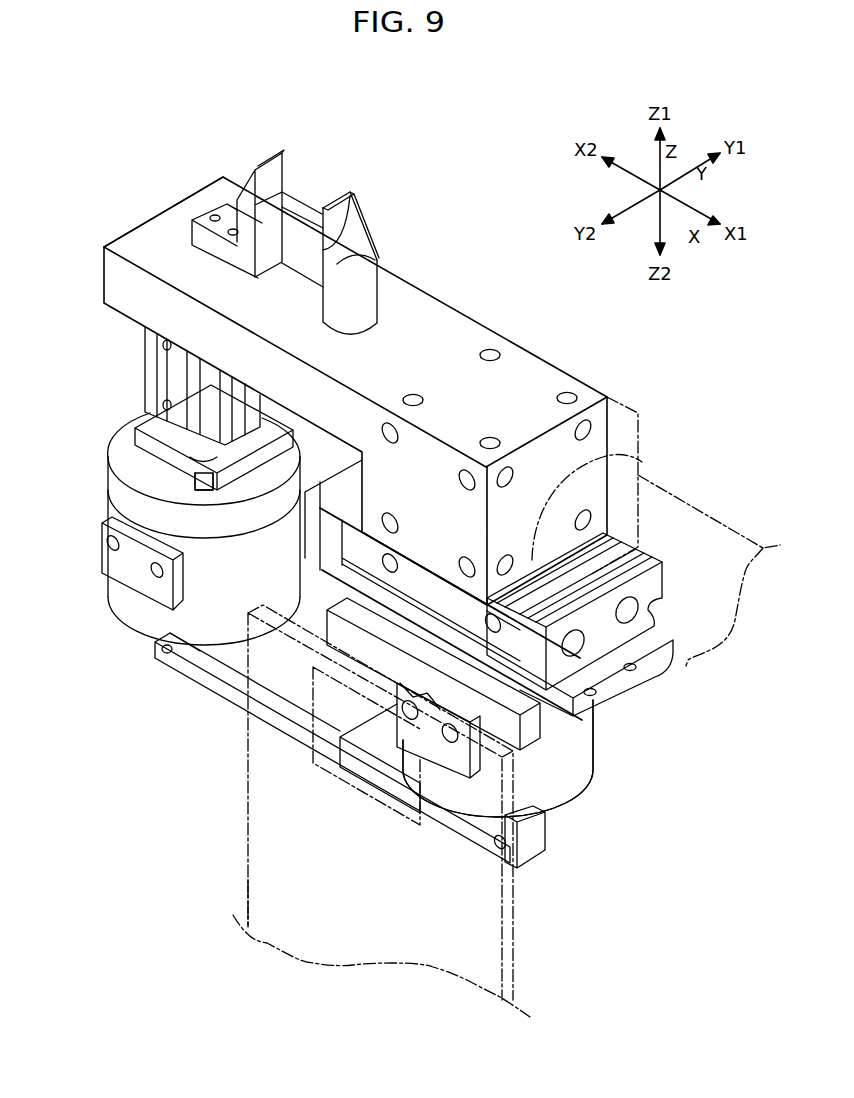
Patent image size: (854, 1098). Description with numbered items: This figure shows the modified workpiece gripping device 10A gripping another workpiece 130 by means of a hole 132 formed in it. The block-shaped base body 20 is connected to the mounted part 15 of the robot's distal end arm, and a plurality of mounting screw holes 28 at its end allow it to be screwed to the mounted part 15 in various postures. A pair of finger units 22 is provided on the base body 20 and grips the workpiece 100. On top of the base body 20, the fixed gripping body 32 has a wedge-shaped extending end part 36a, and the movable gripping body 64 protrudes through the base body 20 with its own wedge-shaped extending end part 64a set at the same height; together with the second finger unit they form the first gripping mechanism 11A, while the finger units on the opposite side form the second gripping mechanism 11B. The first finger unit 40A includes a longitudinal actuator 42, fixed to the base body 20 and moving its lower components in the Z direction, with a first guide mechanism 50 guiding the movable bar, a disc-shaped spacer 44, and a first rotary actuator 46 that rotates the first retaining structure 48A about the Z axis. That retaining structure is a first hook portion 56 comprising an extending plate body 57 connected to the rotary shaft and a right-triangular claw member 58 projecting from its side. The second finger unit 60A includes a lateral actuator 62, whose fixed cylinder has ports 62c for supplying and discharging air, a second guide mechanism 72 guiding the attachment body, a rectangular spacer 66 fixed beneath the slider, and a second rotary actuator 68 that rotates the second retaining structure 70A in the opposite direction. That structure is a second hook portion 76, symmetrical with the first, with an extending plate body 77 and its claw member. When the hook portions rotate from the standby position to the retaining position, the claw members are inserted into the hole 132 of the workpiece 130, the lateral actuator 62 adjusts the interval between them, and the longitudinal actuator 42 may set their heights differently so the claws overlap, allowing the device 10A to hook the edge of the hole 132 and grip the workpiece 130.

The workpiece gripping device 10A is at (117, 104).
The first gripping mechanism 11A is at (363, 184).
The second gripping mechanism 11B is at (308, 792).
The mounted part 15 is at (622, 466).
The base body 20 is at (446, 296).
The finger units 22 is at (360, 601).
The mounting screw holes 28 is at (567, 393).
The fixed gripping body 32 is at (240, 206).
The extending end part 36a is at (247, 172).
The first finger unit 40A is at (101, 449).
The longitudinal actuator 42 is at (136, 359).
The spacer 44 is at (115, 486).
The first rotary actuator 46 is at (108, 622).
The first retaining structure 48A is at (292, 748).
The first guide mechanism 50 is at (257, 455).
The first hook portion 56 is at (187, 680).
The extending plate body 57 is at (227, 683).
The claw member 58 is at (373, 695).
The second finger unit 60A is at (618, 754).
The lateral actuator 62 is at (628, 637).
The ports 62c is at (494, 636).
The movable gripping body 64 is at (360, 278).
The extending end part 64a is at (353, 203).
The spacer 66 is at (541, 720).
The second rotary actuator 68 is at (590, 788).
The second retaining structure 70A is at (480, 853).
The second guide mechanism 72 is at (623, 697).
The second hook portion 76 is at (452, 818).
The extending plate body 77 is at (402, 782).
The workpiece 100 is at (319, 811).
The workpiece 130 is at (250, 823).
The hole 132 is at (360, 782).